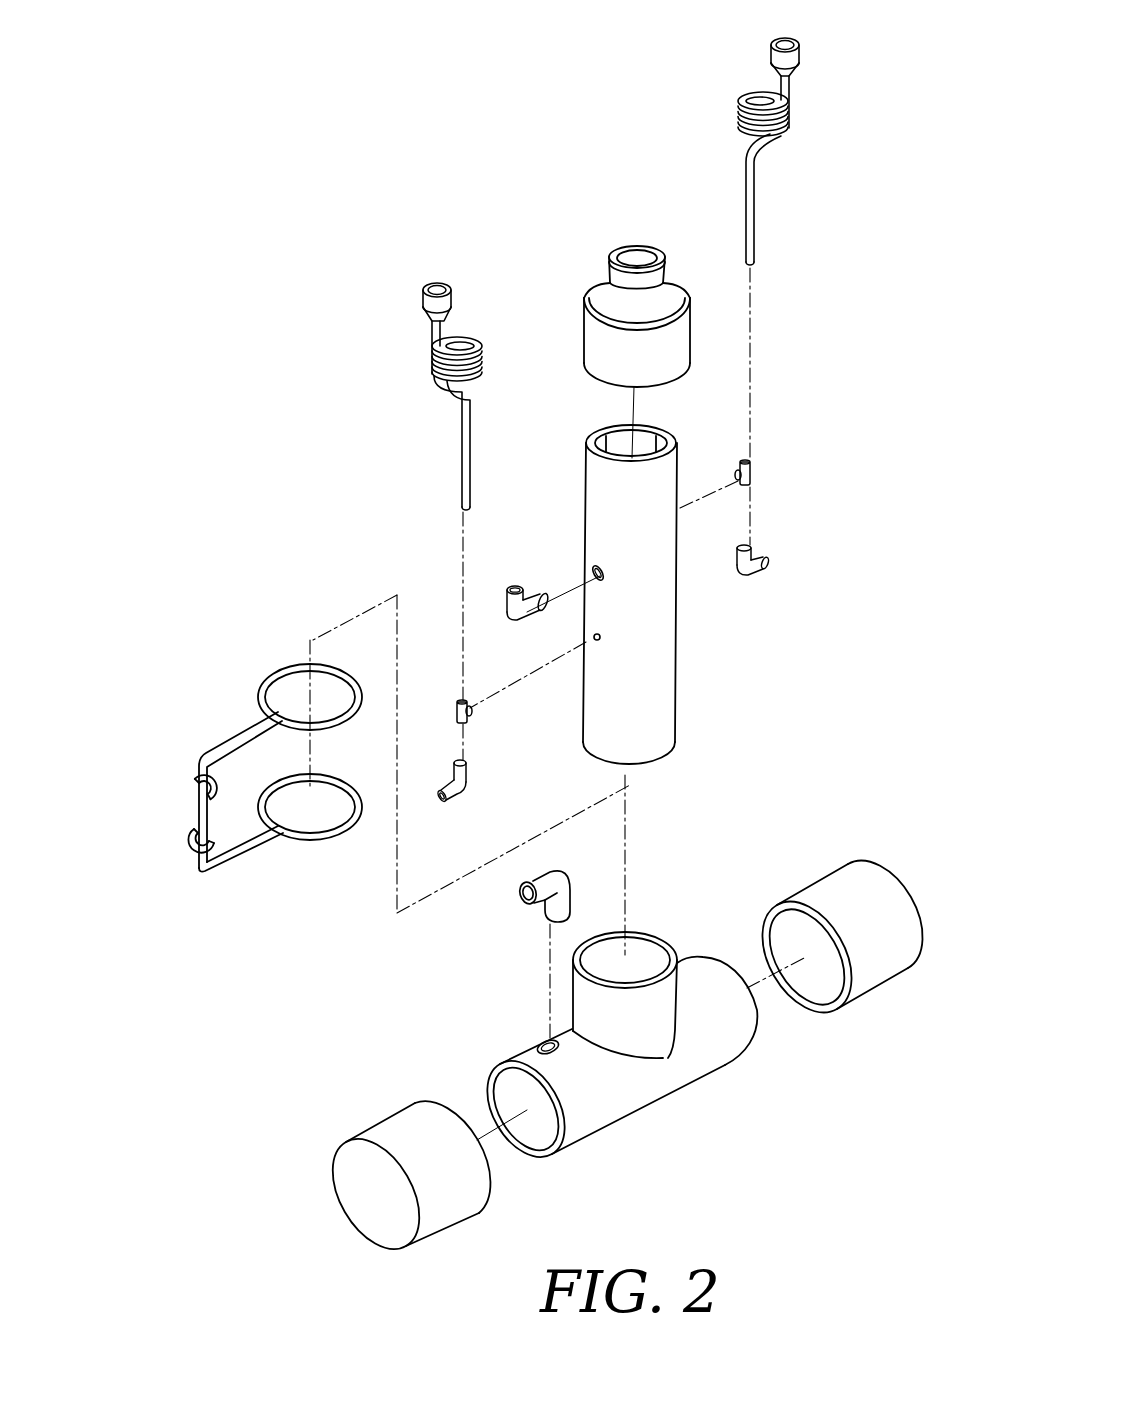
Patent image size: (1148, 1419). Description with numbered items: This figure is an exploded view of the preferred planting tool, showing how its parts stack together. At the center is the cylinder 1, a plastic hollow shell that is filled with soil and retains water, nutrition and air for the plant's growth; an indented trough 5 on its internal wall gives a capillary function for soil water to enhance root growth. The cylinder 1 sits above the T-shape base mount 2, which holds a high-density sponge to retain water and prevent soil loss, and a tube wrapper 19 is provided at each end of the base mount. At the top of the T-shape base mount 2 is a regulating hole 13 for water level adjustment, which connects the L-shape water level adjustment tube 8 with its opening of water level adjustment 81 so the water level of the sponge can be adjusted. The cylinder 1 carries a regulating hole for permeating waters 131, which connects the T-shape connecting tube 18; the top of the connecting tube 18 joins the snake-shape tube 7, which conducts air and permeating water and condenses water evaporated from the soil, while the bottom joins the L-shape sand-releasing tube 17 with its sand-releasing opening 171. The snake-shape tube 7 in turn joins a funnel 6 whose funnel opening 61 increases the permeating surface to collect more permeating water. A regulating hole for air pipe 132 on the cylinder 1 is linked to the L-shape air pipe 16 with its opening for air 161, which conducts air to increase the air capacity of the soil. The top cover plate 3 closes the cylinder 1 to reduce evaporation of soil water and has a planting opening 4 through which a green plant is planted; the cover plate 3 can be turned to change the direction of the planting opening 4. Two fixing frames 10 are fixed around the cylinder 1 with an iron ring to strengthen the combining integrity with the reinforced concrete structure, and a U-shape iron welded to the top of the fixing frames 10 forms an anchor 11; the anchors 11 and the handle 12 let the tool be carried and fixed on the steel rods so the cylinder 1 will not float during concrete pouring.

The cylinder 1 is at (665, 650).
The regulating hole for permeating waters 131 is at (596, 640).
The regulating hole for air pipe 132 is at (596, 573).
The T-shape base mount 2 is at (688, 1067).
The top cover plate 3 is at (651, 360).
The planting opening 4 is at (637, 253).
The indented trough 5 is at (635, 428).
The funnel 6 is at (771, 52).
The funnel opening 61 is at (786, 44).
The snake-shape tube 7 is at (788, 128).
The L-shape water level adjustment tube 8 is at (555, 873).
The opening of water level adjustment 81 is at (520, 892).
The fixing frame 10 is at (287, 672).
The anchor 11 is at (191, 777).
The handle 12 is at (199, 814).
The regulating hole for water level adjustment 13 is at (540, 1040).
The L-shape air pipe 16 is at (518, 620).
The opening for air 161 is at (514, 583).
The L-shape sand-releasing tube 17 is at (757, 573).
The sand-releasing opening 171 is at (443, 797).
The T-shape connecting tube 18 is at (752, 470).
The tube wrapper 19 is at (872, 965).